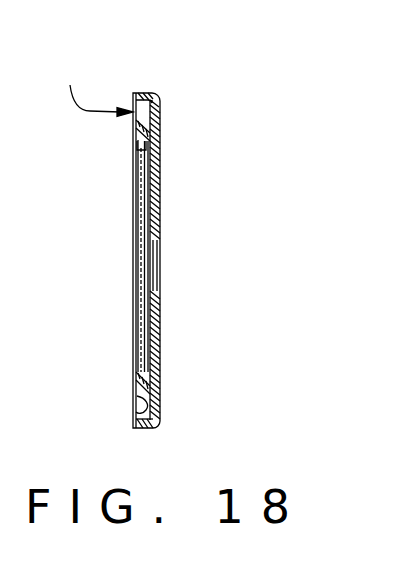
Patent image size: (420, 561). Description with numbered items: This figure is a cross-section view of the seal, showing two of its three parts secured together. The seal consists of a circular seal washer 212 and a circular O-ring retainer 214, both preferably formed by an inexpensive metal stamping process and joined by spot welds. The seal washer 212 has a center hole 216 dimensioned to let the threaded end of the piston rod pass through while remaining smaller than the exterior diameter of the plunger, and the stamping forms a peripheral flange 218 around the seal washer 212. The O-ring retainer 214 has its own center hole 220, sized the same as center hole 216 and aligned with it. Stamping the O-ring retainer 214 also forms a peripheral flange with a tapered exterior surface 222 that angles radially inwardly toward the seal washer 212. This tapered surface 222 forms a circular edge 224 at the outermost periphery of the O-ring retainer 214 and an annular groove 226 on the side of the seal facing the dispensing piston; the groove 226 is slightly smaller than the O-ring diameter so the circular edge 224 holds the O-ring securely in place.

The seal washer 212 is at (160, 128).
The O-ring retainer 214 is at (146, 203).
The center hole 216 is at (158, 250).
The peripheral flange 218 is at (137, 93).
The center hole 220 is at (142, 268).
The tapered exterior surface 222 is at (142, 408).
The circular edge 224 is at (141, 400).
The annular groove 226 is at (92, 89).